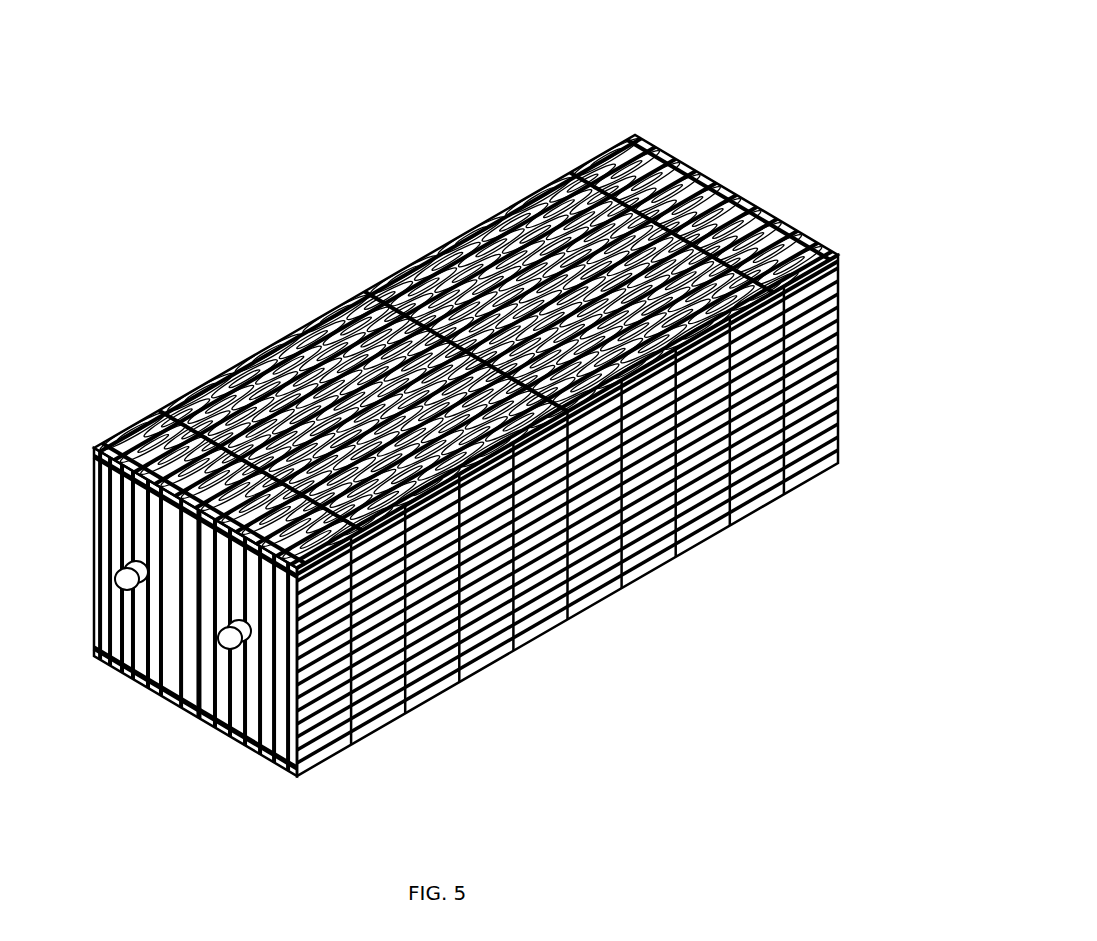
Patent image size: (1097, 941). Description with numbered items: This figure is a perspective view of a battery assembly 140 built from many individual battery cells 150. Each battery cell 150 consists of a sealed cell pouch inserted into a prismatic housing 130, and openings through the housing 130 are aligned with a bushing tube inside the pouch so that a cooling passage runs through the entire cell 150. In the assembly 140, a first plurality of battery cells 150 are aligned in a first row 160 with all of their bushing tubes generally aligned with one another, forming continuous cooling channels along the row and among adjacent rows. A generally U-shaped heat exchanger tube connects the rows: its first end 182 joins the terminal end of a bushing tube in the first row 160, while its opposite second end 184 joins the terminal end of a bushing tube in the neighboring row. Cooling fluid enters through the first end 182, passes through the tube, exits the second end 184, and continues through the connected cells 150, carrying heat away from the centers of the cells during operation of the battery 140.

The battery assembly 140 is at (392, 72).
The prismatic housing 130 is at (106, 428).
The battery cell 150 is at (395, 253).
The first row 160 is at (627, 127).
The first end of U-shaped heat exchanger tube 182 is at (113, 668).
The second end of U-shaped heat exchanger tube 184 is at (213, 762).